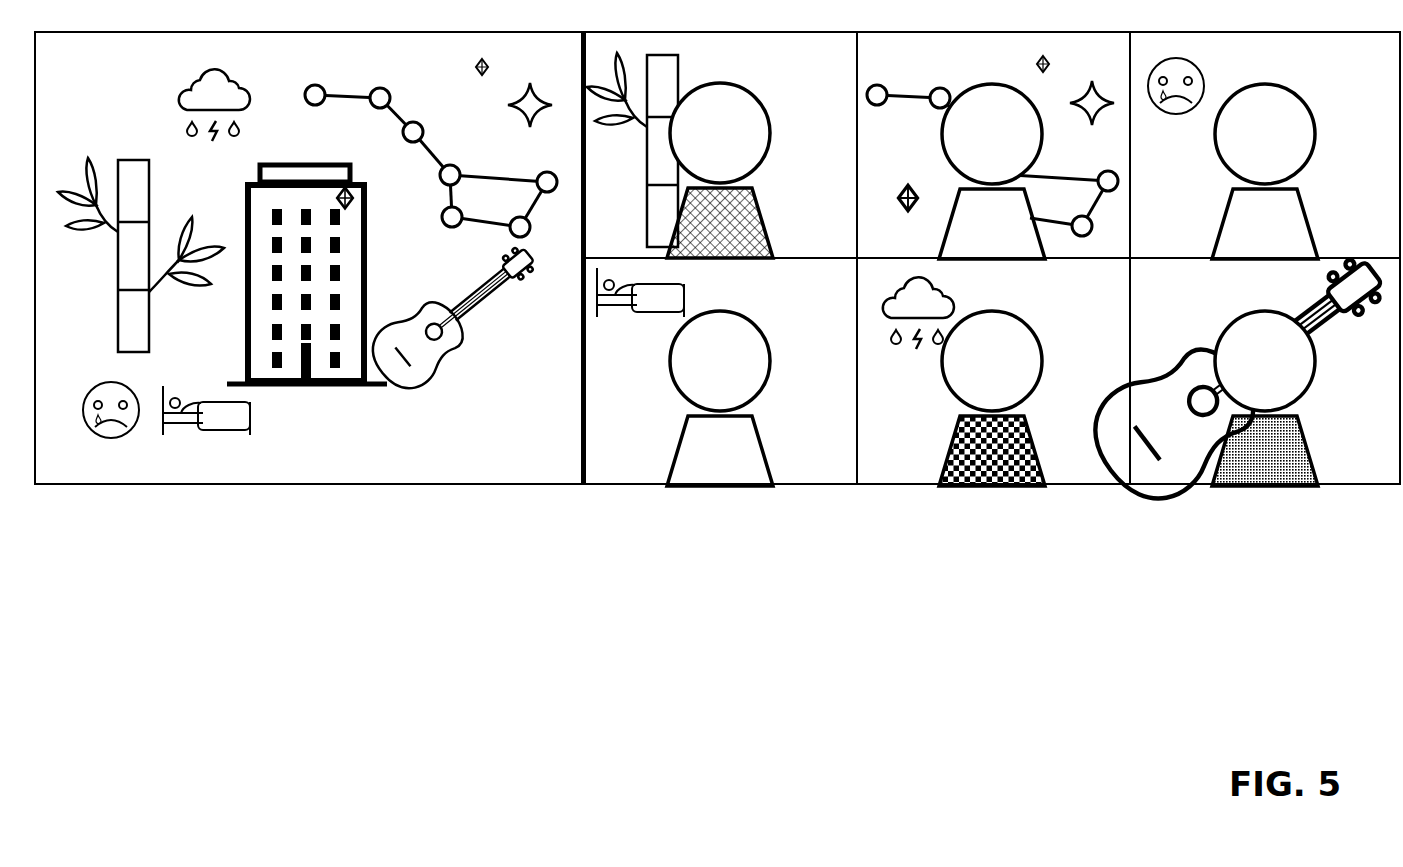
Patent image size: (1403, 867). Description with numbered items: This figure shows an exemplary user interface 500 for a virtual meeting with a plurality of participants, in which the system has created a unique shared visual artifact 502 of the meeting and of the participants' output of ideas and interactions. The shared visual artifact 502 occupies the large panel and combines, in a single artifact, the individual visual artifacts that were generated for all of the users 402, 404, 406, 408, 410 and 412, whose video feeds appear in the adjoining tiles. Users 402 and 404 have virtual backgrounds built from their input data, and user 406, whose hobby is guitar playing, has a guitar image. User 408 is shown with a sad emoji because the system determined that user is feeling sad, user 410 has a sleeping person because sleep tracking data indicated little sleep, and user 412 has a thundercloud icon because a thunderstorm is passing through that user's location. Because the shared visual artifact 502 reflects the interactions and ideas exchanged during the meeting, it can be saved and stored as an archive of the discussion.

The user interface 500 is at (130, 795).
The shared visual artifact 502 is at (558, 70).
The user 402 is at (833, 63).
The user 404 is at (1112, 61).
The user 406 is at (1188, 297).
The user 408 is at (1387, 73).
The user 410 is at (829, 291).
The user 412 is at (1115, 296).